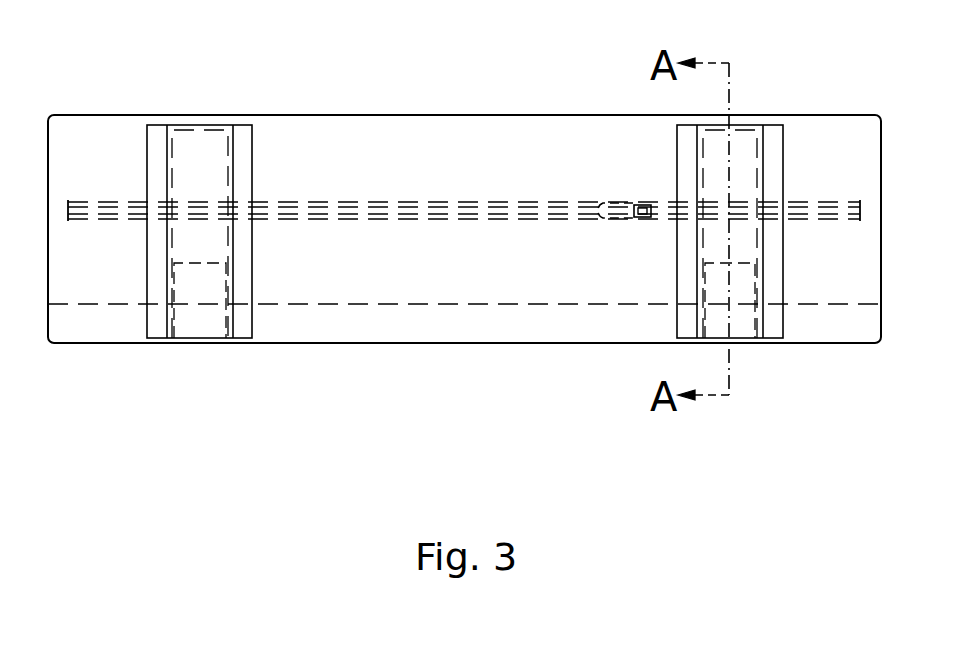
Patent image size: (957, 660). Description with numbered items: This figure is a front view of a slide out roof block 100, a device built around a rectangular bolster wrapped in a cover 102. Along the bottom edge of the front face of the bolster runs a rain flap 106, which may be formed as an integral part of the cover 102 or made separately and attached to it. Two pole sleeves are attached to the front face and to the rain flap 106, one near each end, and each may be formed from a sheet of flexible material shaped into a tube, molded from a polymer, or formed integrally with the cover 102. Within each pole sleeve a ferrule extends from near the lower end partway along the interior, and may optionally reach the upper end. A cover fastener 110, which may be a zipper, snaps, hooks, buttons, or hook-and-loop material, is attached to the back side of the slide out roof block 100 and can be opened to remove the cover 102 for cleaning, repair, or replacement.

The slide out roof block 100 is at (148, 50).
The cover 102 is at (530, 115).
The rain flap 106 is at (452, 343).
The cover fastener 110 is at (422, 202).